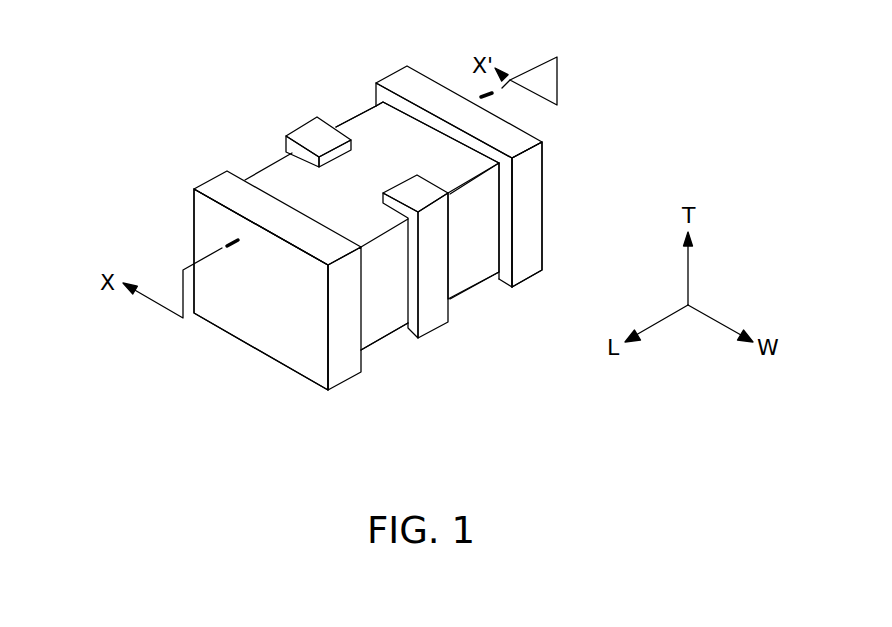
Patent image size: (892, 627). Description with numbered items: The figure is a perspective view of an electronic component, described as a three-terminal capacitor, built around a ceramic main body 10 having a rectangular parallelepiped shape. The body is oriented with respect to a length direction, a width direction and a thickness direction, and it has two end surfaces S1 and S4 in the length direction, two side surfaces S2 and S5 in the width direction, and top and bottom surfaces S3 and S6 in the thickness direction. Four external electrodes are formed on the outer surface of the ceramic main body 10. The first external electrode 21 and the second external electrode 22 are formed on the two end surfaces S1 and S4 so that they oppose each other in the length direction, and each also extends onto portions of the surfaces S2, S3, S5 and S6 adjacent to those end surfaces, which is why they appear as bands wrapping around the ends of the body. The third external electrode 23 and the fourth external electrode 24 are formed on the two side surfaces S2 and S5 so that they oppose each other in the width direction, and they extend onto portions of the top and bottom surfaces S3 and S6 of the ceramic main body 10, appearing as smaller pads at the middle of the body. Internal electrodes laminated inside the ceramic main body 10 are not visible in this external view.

The ceramic main body 10 is at (265, 157).
The first external electrode 21 is at (228, 183).
The second external electrode 22 is at (407, 78).
The third external electrode 23 is at (432, 310).
The fourth external electrode 24 is at (317, 133).
The first end surface S1 is at (265, 287).
The first side surface S2 is at (468, 235).
The top surface S3 is at (402, 143).
The second end surface S4 is at (540, 203).
The second side surface S5 is at (248, 140).
The bottom surface S6 is at (387, 340).